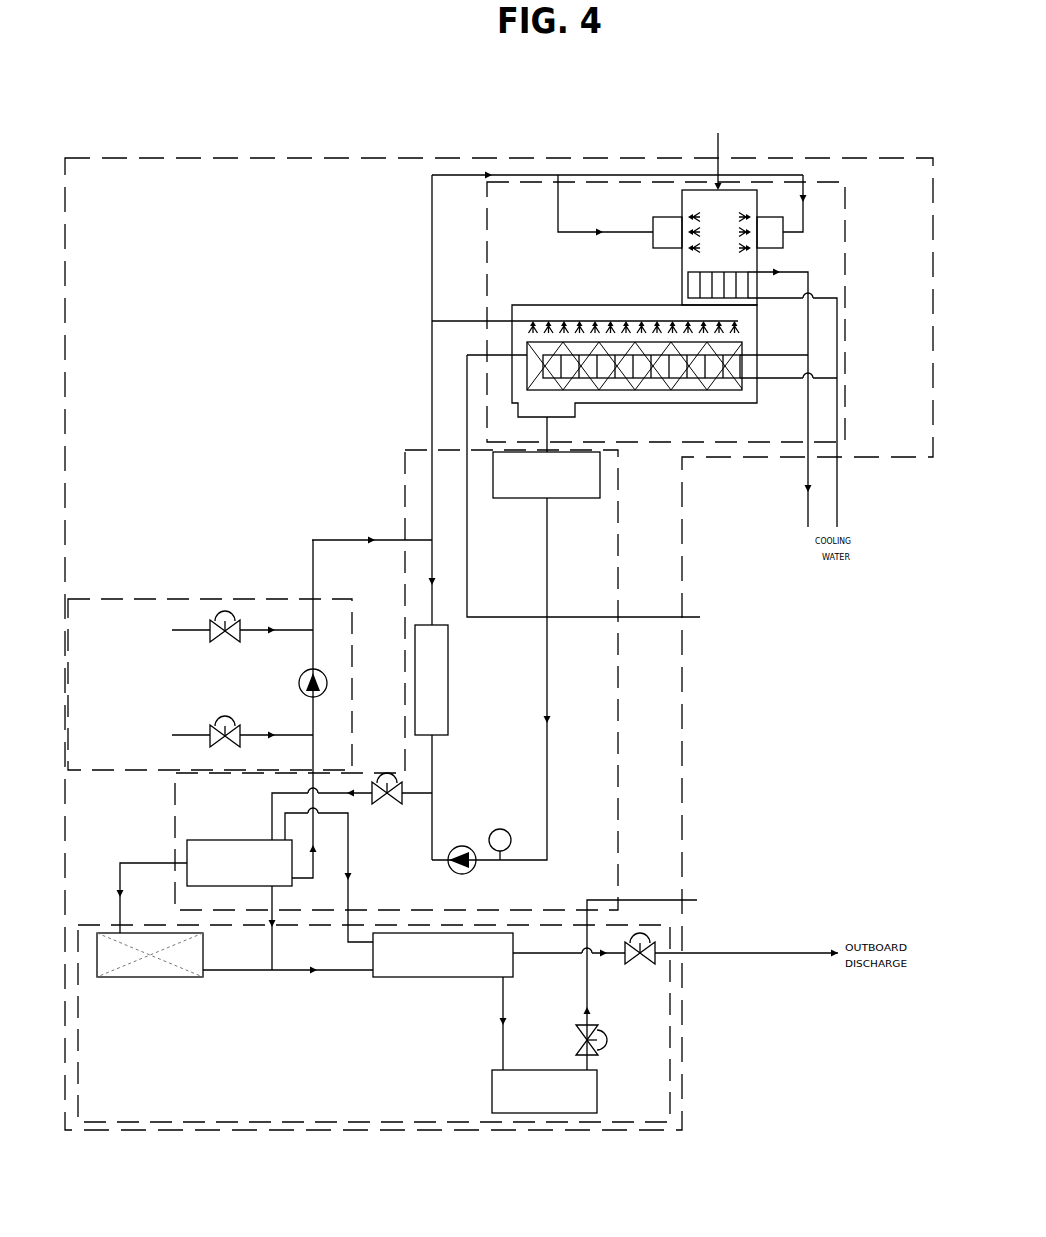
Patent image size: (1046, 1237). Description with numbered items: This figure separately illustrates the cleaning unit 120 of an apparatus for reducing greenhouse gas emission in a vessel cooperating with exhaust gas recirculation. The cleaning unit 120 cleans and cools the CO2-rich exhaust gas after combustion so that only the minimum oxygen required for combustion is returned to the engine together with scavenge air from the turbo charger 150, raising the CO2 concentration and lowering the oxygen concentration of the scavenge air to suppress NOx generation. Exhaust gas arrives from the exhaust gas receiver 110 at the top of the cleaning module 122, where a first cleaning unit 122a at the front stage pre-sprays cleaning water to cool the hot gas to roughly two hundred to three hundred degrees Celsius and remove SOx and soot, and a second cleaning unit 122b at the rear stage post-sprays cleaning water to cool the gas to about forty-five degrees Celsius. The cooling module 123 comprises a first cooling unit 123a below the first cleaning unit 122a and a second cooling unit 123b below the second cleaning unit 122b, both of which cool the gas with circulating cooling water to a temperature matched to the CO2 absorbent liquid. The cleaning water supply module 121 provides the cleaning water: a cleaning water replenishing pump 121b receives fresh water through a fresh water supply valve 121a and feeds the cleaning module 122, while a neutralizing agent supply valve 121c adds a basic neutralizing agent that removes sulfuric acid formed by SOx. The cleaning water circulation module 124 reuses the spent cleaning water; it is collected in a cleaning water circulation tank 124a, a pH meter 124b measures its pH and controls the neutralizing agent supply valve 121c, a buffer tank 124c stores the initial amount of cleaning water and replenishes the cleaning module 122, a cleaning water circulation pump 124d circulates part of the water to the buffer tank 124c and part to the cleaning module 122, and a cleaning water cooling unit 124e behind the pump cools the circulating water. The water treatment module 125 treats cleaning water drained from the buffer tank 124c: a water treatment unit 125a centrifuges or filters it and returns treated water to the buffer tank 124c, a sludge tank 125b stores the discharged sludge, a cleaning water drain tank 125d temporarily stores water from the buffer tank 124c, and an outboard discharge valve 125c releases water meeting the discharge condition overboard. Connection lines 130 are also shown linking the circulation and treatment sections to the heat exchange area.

The exhaust gas receiver 110 is at (758, 126).
The turbo charger 150 is at (718, 186).
The cleaning unit 120 is at (175, 148).
The cleaning water supply module 121 is at (210, 671).
The fresh water supply valve 121a is at (225, 742).
The cleaning water replenishing pump 121b is at (259, 682).
The neutralizing agent supply valve 121c is at (225, 637).
The cleaning module 122 is at (680, 312).
The first cleaning unit 122a is at (718, 247).
The second cleaning unit 122b is at (617, 361).
The cooling module 123 is at (637, 331).
The first cooling unit 123a is at (718, 285).
The second cooling unit 123b is at (634, 366).
The cleaning water circulation module 124 is at (416, 680).
The cleaning water circulation tank 124a is at (546, 475).
The pH meter 124b is at (501, 835).
The buffer tank 124c is at (239, 863).
The cleaning water circulation pump 124d is at (468, 876).
The cleaning water cooling unit 124e is at (477, 680).
The water treatment module 125 is at (458, 1023).
The water treatment unit 125a is at (443, 955).
The sludge tank 125b is at (544, 1091).
The outboard discharge valve 125c is at (641, 960).
The cleaning water drain tank 125d is at (150, 980).
The controller connection line 130 is at (741, 627).